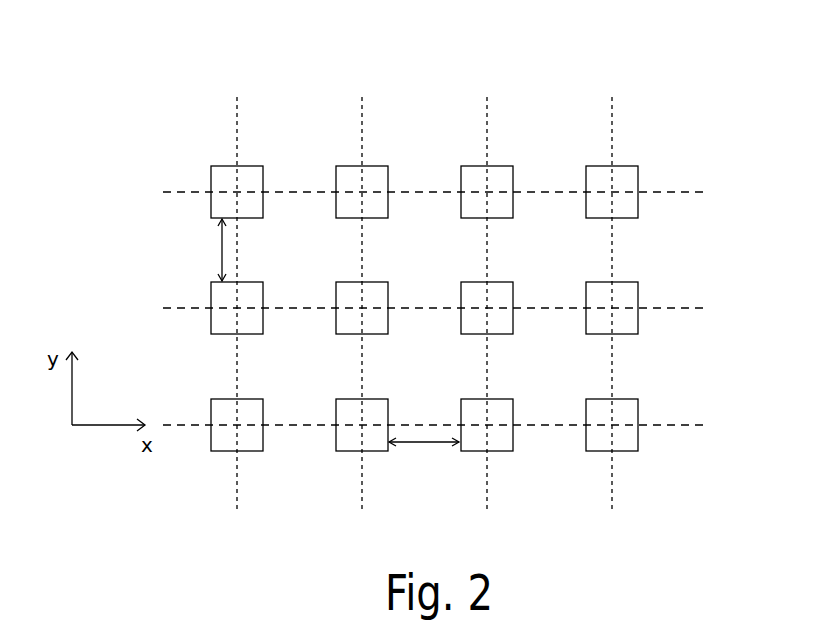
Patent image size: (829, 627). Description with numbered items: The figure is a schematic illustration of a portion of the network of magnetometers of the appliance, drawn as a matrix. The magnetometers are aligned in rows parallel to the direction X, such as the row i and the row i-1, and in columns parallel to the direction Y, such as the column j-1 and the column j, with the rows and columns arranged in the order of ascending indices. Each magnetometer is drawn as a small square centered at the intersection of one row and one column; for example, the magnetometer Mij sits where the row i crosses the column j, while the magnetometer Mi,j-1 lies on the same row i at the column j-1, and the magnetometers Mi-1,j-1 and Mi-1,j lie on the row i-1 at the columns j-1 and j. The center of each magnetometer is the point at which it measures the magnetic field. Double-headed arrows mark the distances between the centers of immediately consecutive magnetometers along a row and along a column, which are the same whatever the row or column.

The magnetometer Mi,j-1 is at (250, 293).
The magnetometer Mij is at (377, 293).
The magnetometer Mi-1,j-1 is at (250, 410).
The magnetometer Mi-1,j is at (377, 410).
The row i is at (697, 308).
The row i-1 is at (697, 425).
The column j-1 is at (237, 513).
The column j is at (362, 513).